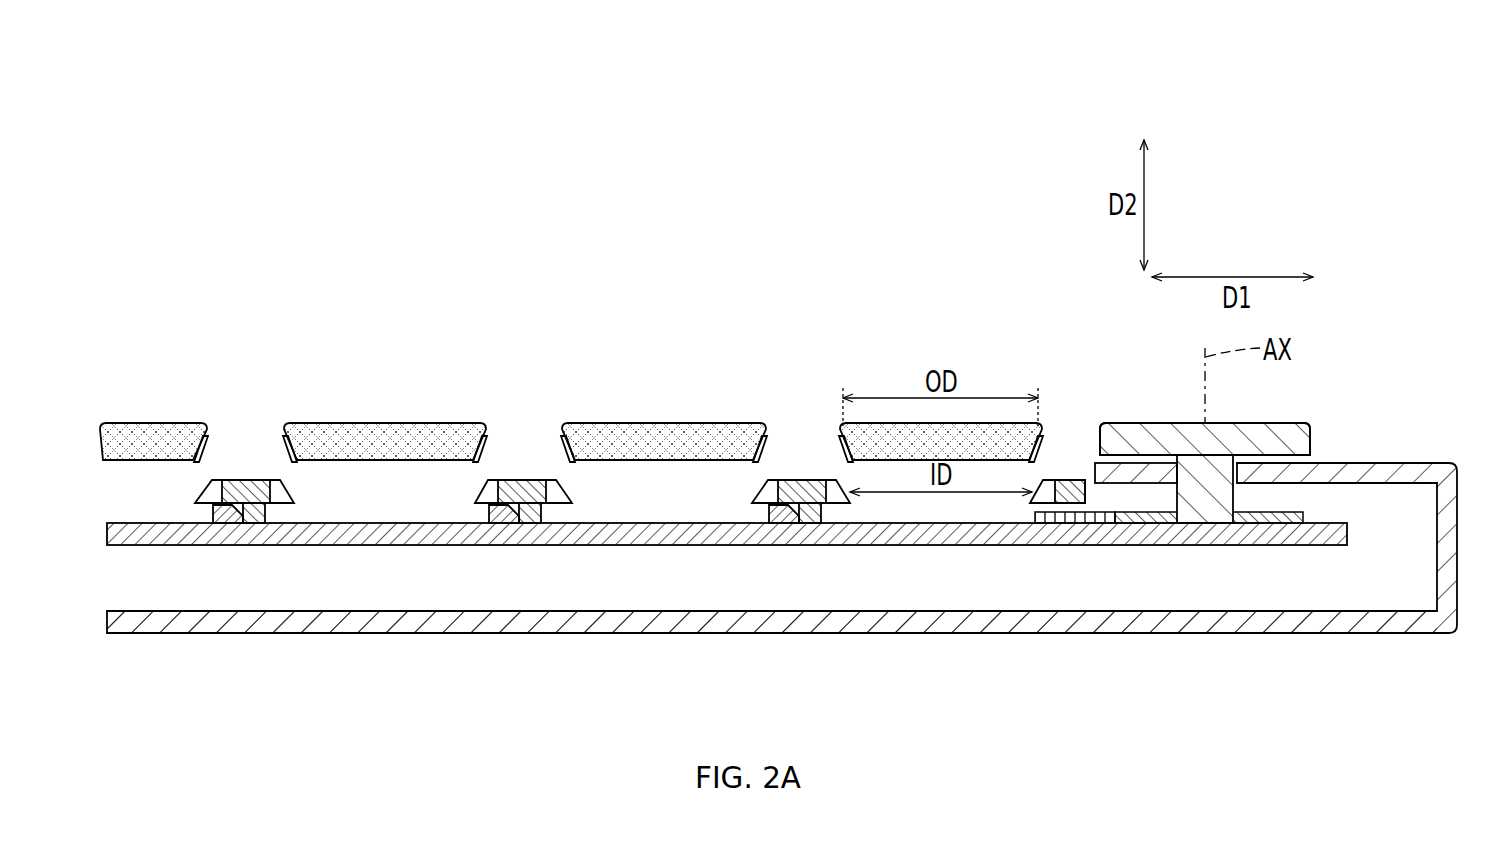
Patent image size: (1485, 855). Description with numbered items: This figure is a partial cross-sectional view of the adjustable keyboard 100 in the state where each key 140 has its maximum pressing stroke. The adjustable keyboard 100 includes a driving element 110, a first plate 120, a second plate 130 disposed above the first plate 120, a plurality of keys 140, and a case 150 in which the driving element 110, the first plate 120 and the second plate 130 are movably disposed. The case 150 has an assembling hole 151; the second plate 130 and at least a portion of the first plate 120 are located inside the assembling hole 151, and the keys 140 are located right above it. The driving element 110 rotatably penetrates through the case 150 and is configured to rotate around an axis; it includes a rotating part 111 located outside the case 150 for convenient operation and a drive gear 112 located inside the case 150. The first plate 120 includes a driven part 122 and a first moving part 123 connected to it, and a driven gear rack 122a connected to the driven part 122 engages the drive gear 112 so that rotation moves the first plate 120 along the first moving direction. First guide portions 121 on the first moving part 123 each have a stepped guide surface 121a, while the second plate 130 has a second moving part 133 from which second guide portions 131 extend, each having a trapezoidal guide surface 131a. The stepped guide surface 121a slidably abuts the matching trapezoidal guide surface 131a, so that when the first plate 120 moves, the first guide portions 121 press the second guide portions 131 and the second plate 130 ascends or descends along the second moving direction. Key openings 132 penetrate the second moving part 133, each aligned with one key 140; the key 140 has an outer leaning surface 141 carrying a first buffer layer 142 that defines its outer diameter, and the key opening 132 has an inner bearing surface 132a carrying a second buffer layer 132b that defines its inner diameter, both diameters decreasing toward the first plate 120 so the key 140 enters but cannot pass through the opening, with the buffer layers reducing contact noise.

The adjustable keyboard 100 is at (1467, 719).
The driving element 110 is at (1217, 472).
The rotating part 111 is at (1278, 440).
The drive gear 112 is at (1138, 517).
The first plate 120 is at (727, 603).
The first guide portion 121 is at (218, 513).
The stepped guide surface 121a is at (785, 518).
The driven part 122 is at (1208, 533).
The driven gear rack 122a is at (1065, 518).
The first moving part 123 is at (348, 525).
The second plate 130 is at (286, 422).
The second guide portion 131 is at (262, 515).
The trapezoidal guide surface 131a is at (822, 515).
The key opening 132 is at (551, 526).
The inner bearing surface 132a is at (550, 493).
The second buffer layer 132b is at (560, 503).
The second moving part 133 is at (237, 493).
The key 140 is at (666, 436).
The outer leaning surface 141 is at (565, 453).
The first buffer layer 142 is at (562, 446).
The case 150 is at (1335, 622).
The assembling hole 151 is at (1086, 468).